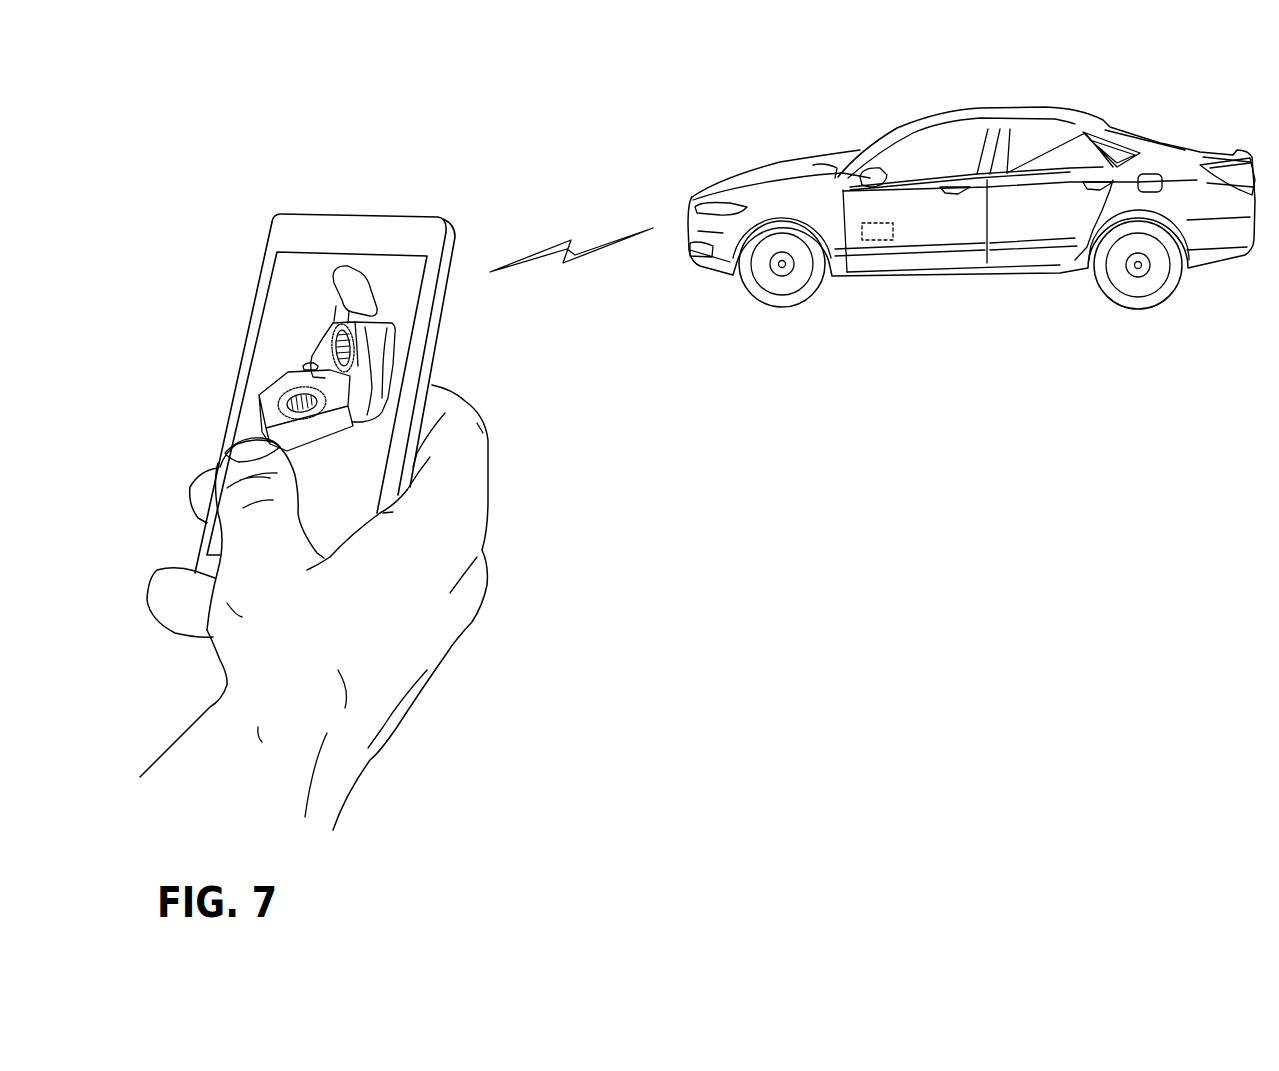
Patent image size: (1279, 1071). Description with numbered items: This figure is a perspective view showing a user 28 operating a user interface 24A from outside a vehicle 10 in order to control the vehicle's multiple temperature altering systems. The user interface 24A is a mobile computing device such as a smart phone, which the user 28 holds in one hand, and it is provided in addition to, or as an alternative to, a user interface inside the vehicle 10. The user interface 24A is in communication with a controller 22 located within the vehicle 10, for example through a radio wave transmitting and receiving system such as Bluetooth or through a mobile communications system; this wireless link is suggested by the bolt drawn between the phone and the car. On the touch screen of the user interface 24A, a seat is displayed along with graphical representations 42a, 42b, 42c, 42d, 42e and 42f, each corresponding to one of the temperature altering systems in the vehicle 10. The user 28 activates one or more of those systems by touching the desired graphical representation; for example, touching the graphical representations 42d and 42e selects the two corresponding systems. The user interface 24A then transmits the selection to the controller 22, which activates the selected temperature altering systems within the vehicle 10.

The vehicle 10 is at (965, 104).
The controller 22 is at (878, 242).
The user interface 24A is at (397, 210).
The user 28 is at (397, 622).
The graphical representation 42a is at (277, 410).
The graphical representation 42b is at (280, 397).
The graphical representation 42c is at (293, 390).
The graphical representation 42d is at (330, 340).
The graphical representation 42e is at (343, 327).
The graphical representation 42f is at (343, 264).